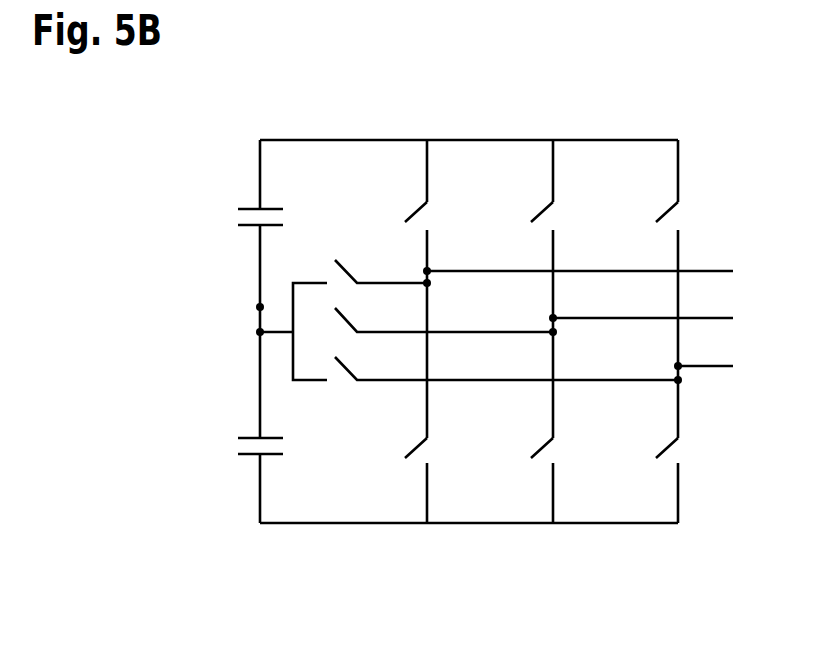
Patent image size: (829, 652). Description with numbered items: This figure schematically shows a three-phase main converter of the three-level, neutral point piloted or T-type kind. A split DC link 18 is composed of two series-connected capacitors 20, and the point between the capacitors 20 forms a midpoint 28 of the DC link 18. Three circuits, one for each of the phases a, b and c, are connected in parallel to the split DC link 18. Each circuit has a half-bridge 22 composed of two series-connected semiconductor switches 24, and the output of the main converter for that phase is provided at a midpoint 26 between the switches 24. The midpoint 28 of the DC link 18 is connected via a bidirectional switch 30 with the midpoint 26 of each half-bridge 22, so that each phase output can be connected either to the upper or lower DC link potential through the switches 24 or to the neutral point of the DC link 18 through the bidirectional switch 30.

The DC link 18 is at (240, 561).
The capacitor 20 is at (258, 209).
The half-bridge 22 is at (405, 561).
The semiconductor switch 24 is at (410, 207).
The midpoint 26 is at (427, 271).
The midpoint 28 is at (260, 332).
The bidirectional switch 30 is at (349, 320).